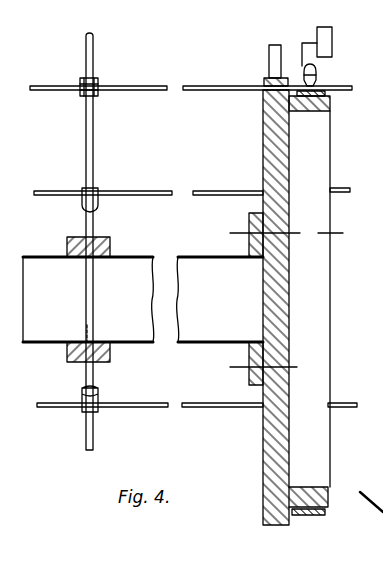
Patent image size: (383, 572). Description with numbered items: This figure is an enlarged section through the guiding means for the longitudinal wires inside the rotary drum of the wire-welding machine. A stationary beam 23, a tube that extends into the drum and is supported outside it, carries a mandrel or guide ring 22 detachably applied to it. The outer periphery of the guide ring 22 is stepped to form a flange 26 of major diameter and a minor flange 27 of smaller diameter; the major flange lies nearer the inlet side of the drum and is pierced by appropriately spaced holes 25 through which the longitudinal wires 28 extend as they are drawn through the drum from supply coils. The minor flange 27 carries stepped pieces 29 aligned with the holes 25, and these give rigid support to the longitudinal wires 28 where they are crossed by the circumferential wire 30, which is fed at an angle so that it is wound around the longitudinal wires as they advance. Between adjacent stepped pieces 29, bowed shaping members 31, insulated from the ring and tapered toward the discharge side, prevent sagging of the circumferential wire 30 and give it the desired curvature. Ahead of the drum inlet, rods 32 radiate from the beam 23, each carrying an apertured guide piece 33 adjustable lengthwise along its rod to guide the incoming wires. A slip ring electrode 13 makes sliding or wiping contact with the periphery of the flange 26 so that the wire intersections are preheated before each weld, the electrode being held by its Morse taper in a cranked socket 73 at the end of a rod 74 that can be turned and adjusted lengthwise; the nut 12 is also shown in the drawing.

The nut 12 is at (316, 66).
The slip ring electrode 13 is at (269, 46).
The guide ring 22 is at (299, 296).
The beam 23 is at (186, 258).
The holes 25 is at (263, 108).
The flange 26 is at (265, 80).
The minor flange 27 is at (321, 112).
The longitudinal wires 28 is at (192, 90).
The stepped pieces 29 is at (333, 97).
The circumferential wire 30 is at (315, 75).
The shaping members 31 is at (325, 516).
The rods 32 is at (85, 52).
The apertured guide piece 33 is at (97, 78).
The socket 73 is at (303, 45).
The rod 74 is at (333, 32).